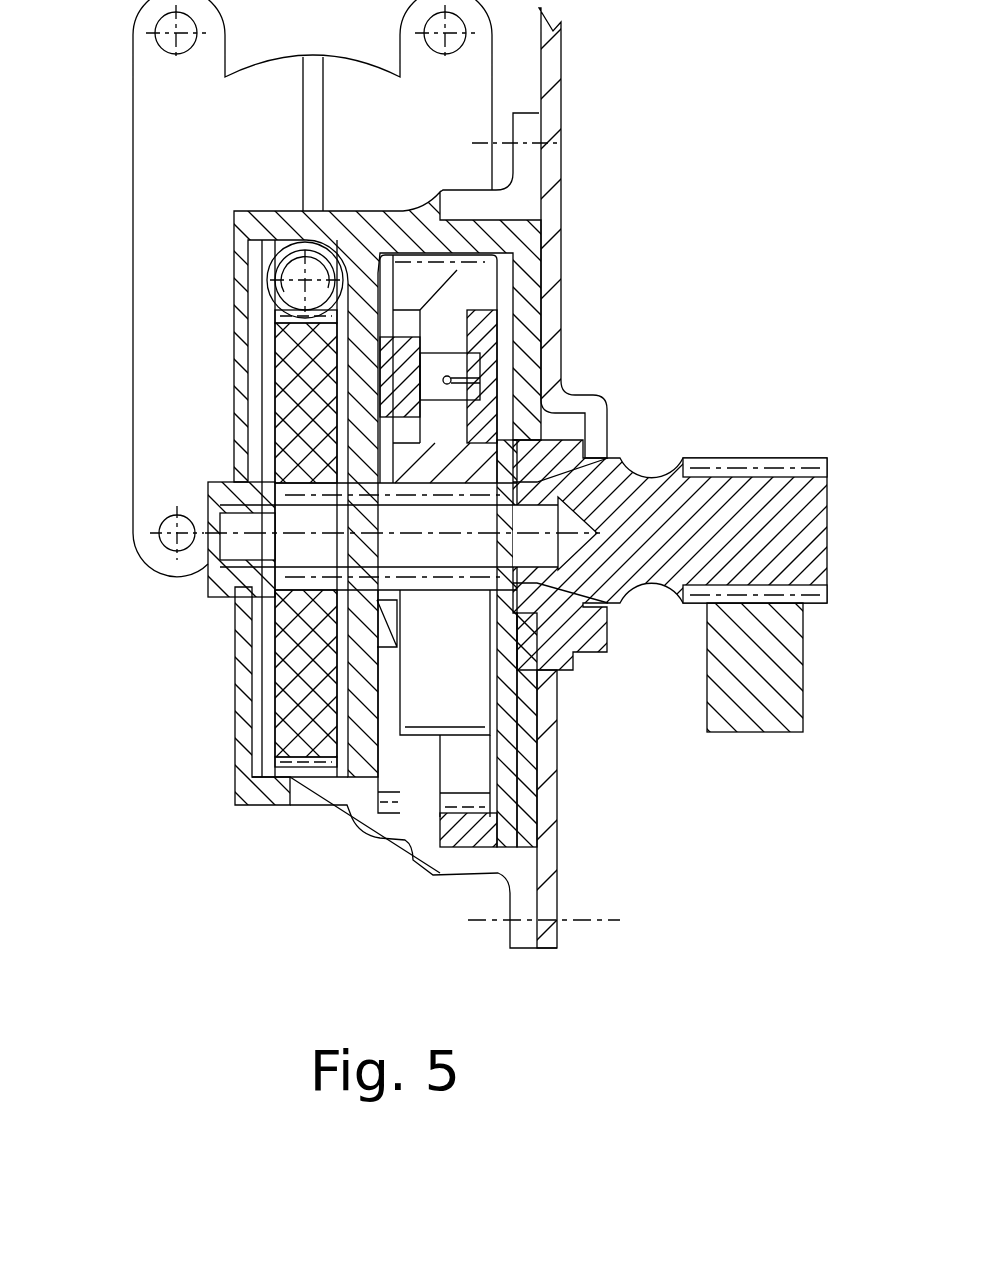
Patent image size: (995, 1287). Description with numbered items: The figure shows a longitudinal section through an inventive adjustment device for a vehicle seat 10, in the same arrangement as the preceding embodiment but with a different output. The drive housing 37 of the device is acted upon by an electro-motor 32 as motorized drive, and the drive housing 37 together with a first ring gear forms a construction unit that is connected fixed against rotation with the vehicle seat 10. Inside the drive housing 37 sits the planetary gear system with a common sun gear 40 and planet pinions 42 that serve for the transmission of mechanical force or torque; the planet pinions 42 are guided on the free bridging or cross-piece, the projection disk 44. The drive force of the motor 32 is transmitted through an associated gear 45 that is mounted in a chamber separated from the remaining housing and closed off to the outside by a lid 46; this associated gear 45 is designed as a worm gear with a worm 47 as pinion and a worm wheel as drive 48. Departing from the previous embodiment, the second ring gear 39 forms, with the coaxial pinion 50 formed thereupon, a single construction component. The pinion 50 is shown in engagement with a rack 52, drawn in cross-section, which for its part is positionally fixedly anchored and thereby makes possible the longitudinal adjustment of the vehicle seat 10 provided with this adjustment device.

The vehicle seat 10 is at (547, 850).
The electro-motor 32 is at (153, 393).
The drive housing 37 is at (328, 788).
The second ring gear 39 is at (468, 830).
The sun gear 40 is at (605, 455).
The planet pinions 42 is at (382, 521).
The projection disk 44 is at (402, 345).
The associated gear 45 is at (235, 402).
The lid 46 is at (247, 712).
The worm 47 is at (304, 276).
The worm wheel 48 is at (315, 630).
The pinion 50 is at (808, 519).
The rack 52 is at (808, 657).